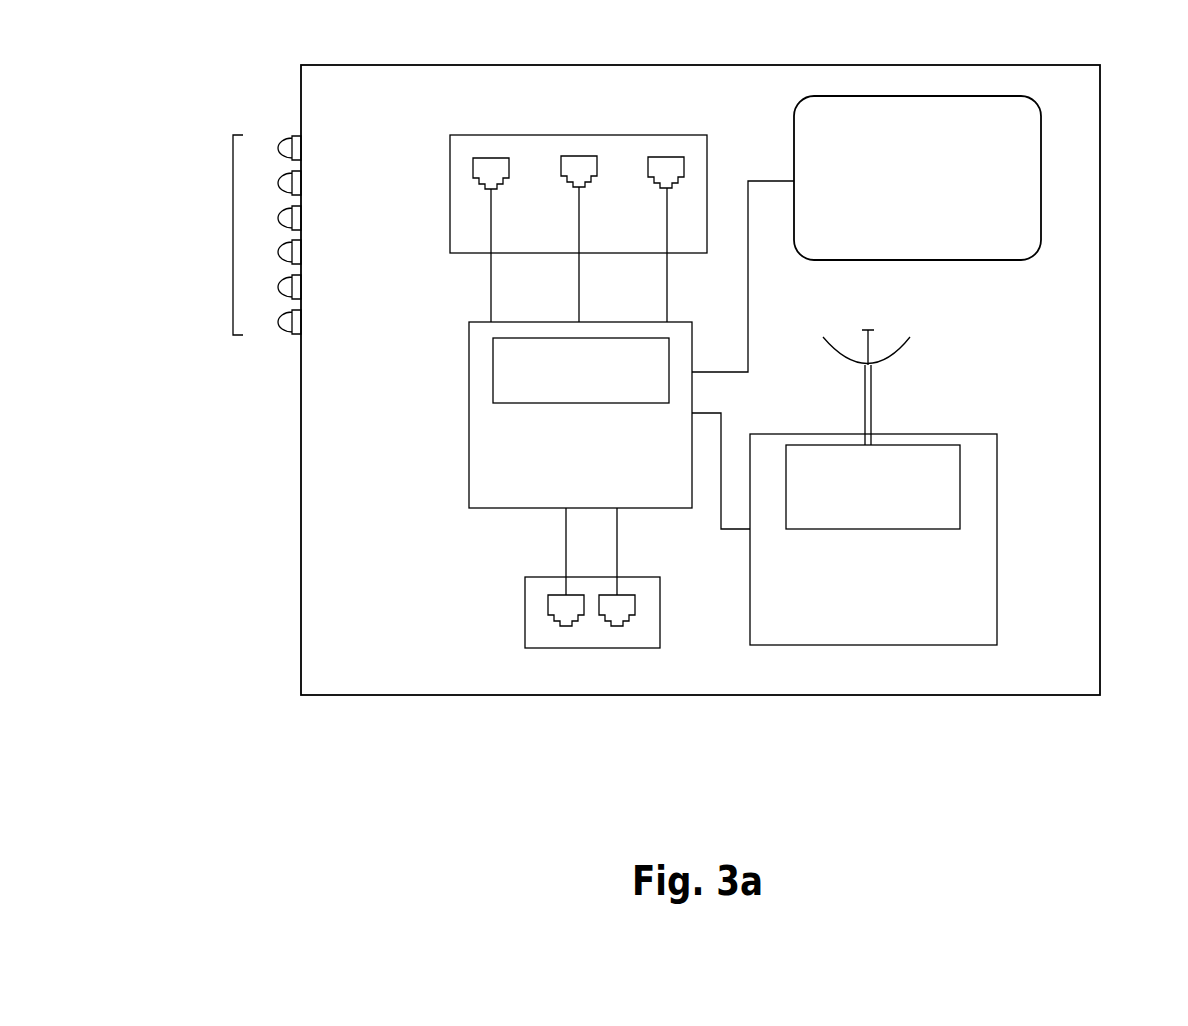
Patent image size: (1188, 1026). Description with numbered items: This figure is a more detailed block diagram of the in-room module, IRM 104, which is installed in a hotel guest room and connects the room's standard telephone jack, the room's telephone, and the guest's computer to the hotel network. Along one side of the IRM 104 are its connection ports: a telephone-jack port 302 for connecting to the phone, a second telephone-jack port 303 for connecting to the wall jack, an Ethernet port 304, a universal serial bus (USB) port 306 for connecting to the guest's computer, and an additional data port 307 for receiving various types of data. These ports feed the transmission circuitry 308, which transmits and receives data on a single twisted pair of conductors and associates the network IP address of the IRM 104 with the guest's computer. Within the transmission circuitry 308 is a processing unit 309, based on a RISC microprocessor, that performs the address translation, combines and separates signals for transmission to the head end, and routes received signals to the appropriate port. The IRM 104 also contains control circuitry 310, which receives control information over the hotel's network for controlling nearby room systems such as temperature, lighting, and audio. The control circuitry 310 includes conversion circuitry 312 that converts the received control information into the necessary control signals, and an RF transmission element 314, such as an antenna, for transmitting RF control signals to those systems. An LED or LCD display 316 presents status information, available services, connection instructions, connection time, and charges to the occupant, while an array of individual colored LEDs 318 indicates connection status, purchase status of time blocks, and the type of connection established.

The in-room module (IRM) 104 is at (1100, 113).
The RJ-11 port 302 is at (548, 608).
The RJ-11 port 303 is at (635, 608).
The Ethernet port 304 is at (483, 157).
The universal serial bus (USB) port 306 is at (579, 155).
The additional data port 307 is at (681, 157).
The transmission circuitry 308 is at (469, 468).
The processing unit 309 is at (493, 380).
The control circuitry 310 is at (997, 520).
The conversion circuitry 312 is at (960, 457).
The RF transmission element 314 is at (907, 343).
The LED or LCD display 316 is at (794, 130).
The array of individual colored LEDs 318 is at (233, 240).